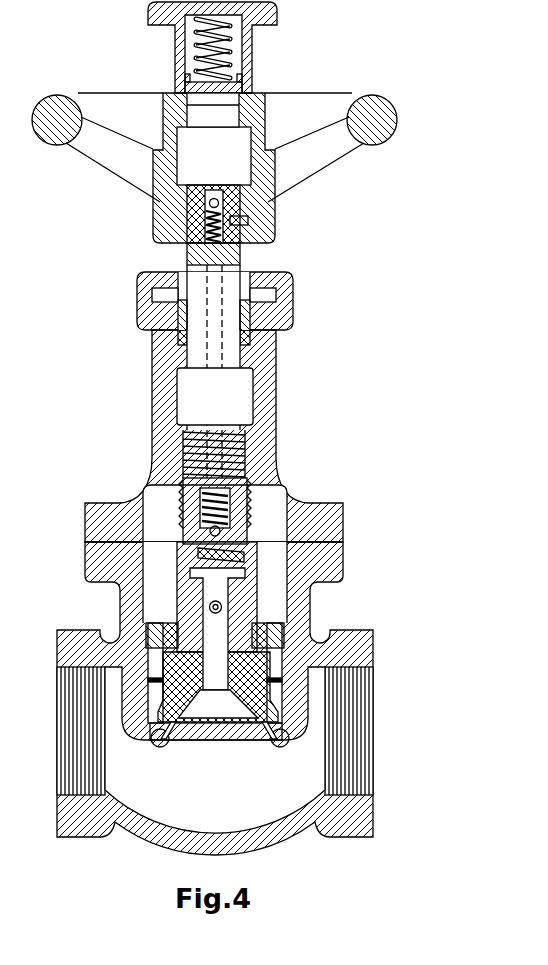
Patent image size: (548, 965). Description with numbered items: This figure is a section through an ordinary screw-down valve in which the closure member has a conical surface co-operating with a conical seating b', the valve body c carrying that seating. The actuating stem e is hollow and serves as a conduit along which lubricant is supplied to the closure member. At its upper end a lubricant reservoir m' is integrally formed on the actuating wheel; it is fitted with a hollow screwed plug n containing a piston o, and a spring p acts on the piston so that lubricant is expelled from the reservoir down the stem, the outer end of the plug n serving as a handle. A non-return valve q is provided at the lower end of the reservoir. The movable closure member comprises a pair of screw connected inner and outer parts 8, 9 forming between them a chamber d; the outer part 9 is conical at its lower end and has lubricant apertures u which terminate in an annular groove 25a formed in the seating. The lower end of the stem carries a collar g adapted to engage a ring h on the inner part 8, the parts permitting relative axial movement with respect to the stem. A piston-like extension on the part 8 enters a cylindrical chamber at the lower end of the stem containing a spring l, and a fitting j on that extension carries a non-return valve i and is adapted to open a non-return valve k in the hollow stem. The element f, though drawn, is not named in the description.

The spring p is at (196, 44).
The hollow screwed plug n is at (252, 52).
The piston o is at (252, 88).
The non-return valve q is at (210, 204).
The lubricant reservoir m' is at (214, 168).
The stem e is at (248, 508).
The non-return valve k is at (195, 532).
The spring l is at (229, 557).
The disc holder f is at (191, 572).
The fitting j is at (235, 582).
The non-return valve i is at (210, 610).
The ring h is at (152, 628).
The collar g is at (282, 632).
The outer part 9 is at (157, 695).
The inner part 8 is at (218, 703).
The conical seating b' is at (231, 739).
The lubricant apertures u is at (162, 730).
The chamber d is at (212, 745).
The annular groove 25a is at (152, 744).
The valve body c is at (298, 827).